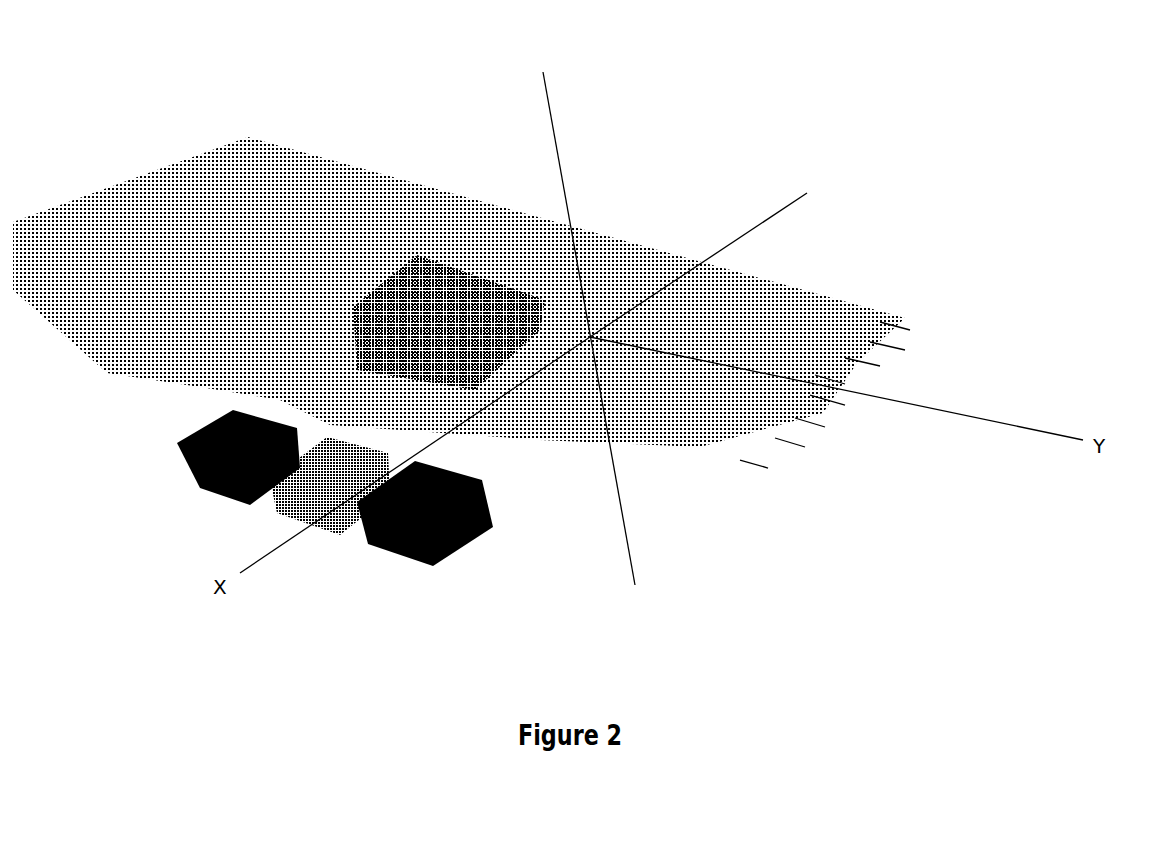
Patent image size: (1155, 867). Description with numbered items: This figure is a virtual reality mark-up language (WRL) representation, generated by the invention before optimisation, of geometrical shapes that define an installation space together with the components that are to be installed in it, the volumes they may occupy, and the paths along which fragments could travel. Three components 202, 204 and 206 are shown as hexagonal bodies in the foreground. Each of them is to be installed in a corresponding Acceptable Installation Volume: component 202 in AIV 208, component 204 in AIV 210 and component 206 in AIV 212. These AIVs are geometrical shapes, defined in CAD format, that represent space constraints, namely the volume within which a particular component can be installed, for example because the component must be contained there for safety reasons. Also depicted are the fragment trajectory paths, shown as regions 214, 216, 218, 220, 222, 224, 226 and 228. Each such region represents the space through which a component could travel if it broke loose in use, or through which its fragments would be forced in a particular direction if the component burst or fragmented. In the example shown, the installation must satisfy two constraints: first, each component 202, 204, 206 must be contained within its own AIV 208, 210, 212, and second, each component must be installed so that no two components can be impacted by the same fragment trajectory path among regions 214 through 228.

The component 202 is at (185, 477).
The component 204 is at (297, 513).
The component 206 is at (433, 565).
The Acceptable Installation Volume 208 is at (482, 232).
The Acceptable Installation Volume 210 is at (408, 270).
The Acceptable Installation Volume 212 is at (313, 327).
The fragment trajectory path region 214 is at (892, 328).
The fragment trajectory path region 216 is at (892, 348).
The fragment trajectory path region 218 is at (858, 363).
The fragment trajectory path region 220 is at (840, 382).
The fragment trajectory path region 222 is at (840, 403).
The fragment trajectory path region 224 is at (822, 425).
The fragment trajectory path region 226 is at (802, 445).
The fragment trajectory path region 228 is at (765, 467).